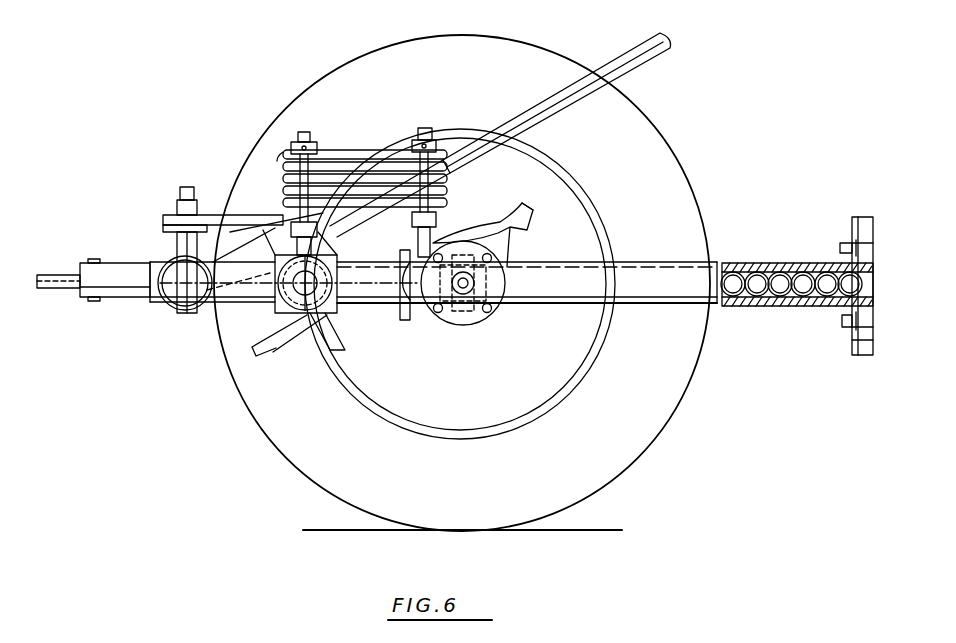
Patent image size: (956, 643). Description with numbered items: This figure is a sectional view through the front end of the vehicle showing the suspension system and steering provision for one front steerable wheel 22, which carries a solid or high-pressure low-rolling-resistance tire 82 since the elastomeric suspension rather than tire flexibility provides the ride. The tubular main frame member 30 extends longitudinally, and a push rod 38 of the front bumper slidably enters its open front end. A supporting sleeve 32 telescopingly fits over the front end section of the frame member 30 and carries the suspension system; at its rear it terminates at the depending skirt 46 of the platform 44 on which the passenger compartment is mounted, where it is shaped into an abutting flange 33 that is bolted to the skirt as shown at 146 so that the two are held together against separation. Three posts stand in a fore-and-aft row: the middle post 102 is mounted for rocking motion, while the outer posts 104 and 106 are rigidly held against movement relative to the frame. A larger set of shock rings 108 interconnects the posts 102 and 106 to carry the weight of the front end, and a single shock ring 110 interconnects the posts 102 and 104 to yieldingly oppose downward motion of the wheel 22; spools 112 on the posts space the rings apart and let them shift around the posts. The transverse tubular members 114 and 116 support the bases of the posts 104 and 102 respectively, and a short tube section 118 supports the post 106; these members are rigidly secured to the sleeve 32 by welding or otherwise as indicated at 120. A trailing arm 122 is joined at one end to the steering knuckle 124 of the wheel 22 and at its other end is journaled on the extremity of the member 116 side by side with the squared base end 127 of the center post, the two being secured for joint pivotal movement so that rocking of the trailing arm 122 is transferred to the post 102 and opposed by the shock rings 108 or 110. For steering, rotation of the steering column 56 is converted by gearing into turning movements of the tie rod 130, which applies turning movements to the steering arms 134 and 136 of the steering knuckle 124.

The front steerable wheel 22 is at (288, 108).
The main frame member 30 is at (137, 287).
The supporting sleeve 32 is at (667, 305).
The abutting flange 33 is at (848, 242).
The push rod 38 is at (62, 277).
The platform 44 is at (863, 216).
The depending flange or skirt 46 is at (848, 343).
The steering column 56 is at (563, 103).
The tire 82 is at (612, 472).
The middle post 102 is at (303, 130).
The outer post 104 is at (185, 187).
The outer post 106 is at (430, 128).
The set of shock rings 108 is at (360, 193).
The shock ring 110 is at (245, 222).
The spool 112 is at (283, 170).
The transverse tubular member 114 is at (167, 306).
The transverse tubular member 116 is at (329, 265).
The short tube section 118 is at (400, 312).
The securement 120 is at (173, 257).
The trailing arm 122 is at (377, 308).
The steering knuckle 124 is at (482, 326).
The squared base end 127 is at (262, 310).
The tie rod 130 is at (757, 278).
The steering arm 134 is at (484, 215).
The steering arm 136 is at (512, 246).
The bolted securement 146 is at (863, 357).